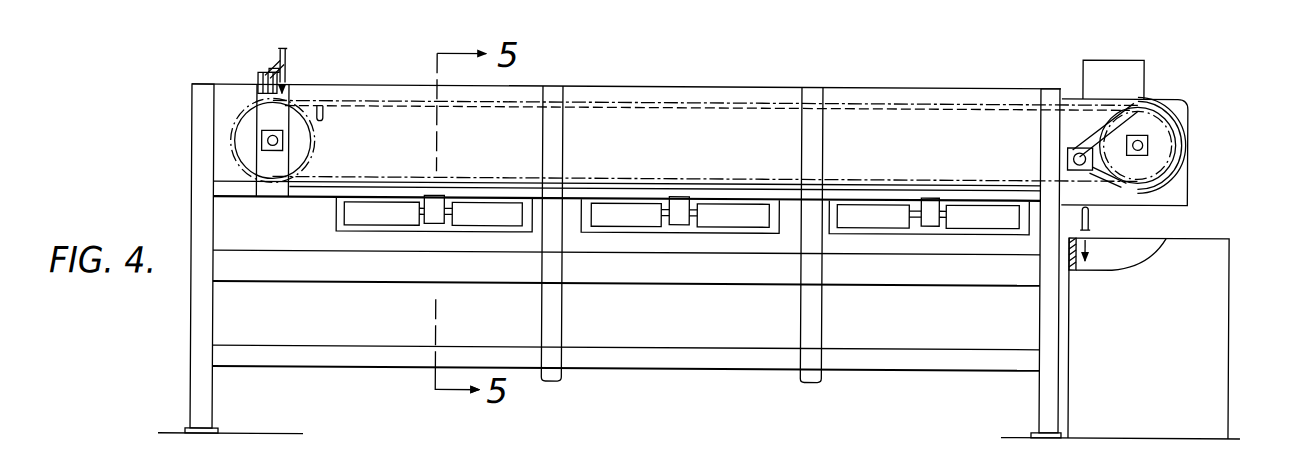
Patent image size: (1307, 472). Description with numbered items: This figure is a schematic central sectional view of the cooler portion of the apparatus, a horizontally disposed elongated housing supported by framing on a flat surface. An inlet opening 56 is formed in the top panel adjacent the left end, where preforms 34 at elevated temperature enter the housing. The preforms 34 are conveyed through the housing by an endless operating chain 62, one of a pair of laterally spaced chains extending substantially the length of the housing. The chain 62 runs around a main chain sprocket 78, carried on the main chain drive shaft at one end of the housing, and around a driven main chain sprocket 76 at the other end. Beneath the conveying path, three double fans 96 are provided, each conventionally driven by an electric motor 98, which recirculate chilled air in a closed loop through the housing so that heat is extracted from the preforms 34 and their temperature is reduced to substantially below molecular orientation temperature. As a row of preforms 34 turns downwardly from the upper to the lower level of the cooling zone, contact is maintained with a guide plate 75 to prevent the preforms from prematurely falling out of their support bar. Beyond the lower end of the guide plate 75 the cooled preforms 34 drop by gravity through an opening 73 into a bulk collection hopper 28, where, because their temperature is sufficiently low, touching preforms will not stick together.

The bulk collection hopper 28 is at (1233, 238).
The preform 34 is at (323, 120).
The inlet opening 56 is at (304, 80).
The operating chain 62 is at (368, 102).
The opening 73 is at (1087, 192).
The guide plate 75 is at (1183, 123).
The driven main chain sprocket 76 is at (250, 122).
The main chain sprocket 78 is at (1138, 118).
The fan 96 is at (416, 234).
The electric motor 98 is at (445, 223).